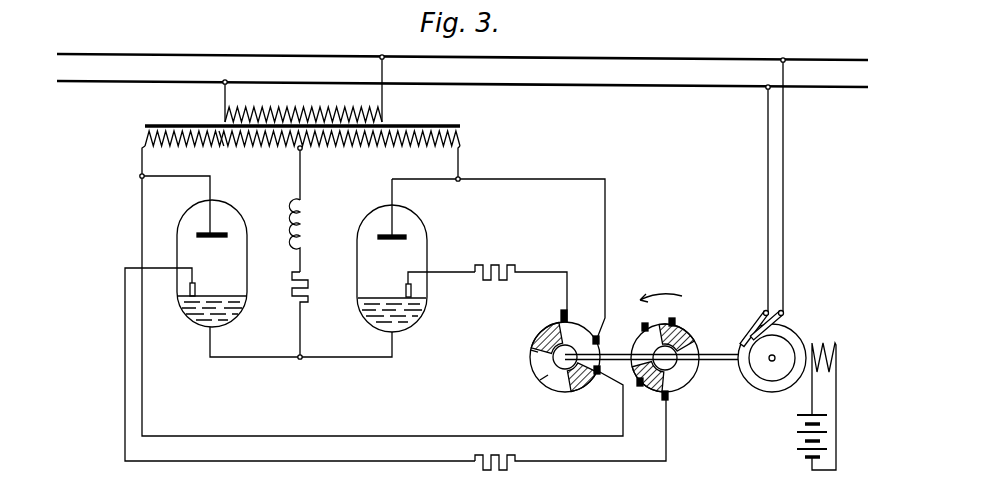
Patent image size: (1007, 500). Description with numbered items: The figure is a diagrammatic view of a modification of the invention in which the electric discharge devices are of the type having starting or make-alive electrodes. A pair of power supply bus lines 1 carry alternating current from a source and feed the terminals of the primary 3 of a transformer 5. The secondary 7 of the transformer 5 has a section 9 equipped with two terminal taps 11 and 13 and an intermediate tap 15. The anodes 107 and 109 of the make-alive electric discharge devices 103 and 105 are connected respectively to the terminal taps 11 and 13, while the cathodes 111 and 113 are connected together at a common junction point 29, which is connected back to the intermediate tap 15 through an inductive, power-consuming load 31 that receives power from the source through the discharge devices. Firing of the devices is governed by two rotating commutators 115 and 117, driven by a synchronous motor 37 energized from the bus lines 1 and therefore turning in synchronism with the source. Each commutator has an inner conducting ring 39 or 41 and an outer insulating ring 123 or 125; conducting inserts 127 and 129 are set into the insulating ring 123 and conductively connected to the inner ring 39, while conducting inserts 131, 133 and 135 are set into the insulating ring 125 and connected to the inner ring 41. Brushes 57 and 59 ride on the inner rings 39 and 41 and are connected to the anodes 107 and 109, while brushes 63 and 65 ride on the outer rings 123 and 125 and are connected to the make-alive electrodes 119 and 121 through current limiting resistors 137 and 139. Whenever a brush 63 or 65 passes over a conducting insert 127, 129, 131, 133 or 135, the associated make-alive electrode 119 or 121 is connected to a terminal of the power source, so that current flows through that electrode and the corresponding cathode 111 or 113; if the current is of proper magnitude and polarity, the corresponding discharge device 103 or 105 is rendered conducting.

The power supply bus lines 1 is at (513, 83).
The primary 3 is at (384, 118).
The transformer 5 is at (457, 123).
The secondary 7 is at (126, 158).
The section 9 is at (222, 150).
The terminal tap 11 is at (147, 150).
The terminal tap 13 is at (458, 150).
The intermediate tap 15 is at (302, 150).
The junction point 29 is at (301, 356).
The load 31 is at (338, 253).
The synchronous motor 37 is at (784, 418).
The inner conducting ring 39 is at (696, 342).
The inner conducting ring 41 is at (545, 380).
The brush 57 is at (600, 371).
The brush 59 is at (600, 343).
The brush 63 is at (668, 400).
The brush 65 is at (570, 318).
The make-alive electric discharge device 103 is at (236, 205).
The make-alive electric discharge device 105 is at (417, 206).
The anode 107 is at (197, 232).
The anode 109 is at (378, 233).
The cathode 111 is at (190, 320).
The cathode 113 is at (415, 325).
The commutator 115 is at (729, 398).
The commutator 117 is at (574, 418).
The make-alive electrode 119 is at (190, 290).
The make-alive electrode 121 is at (412, 290).
The insulating ring 123 is at (652, 322).
The insulating ring 125 is at (538, 364).
The conducting insert 127 is at (642, 386).
The conducting insert 129 is at (674, 326).
The conducting insert 131 is at (561, 320).
The conducting insert 133 is at (592, 385).
The conducting insert 135 is at (540, 345).
The current limiting resistor 137 is at (478, 462).
The current limiting resistor 139 is at (512, 265).